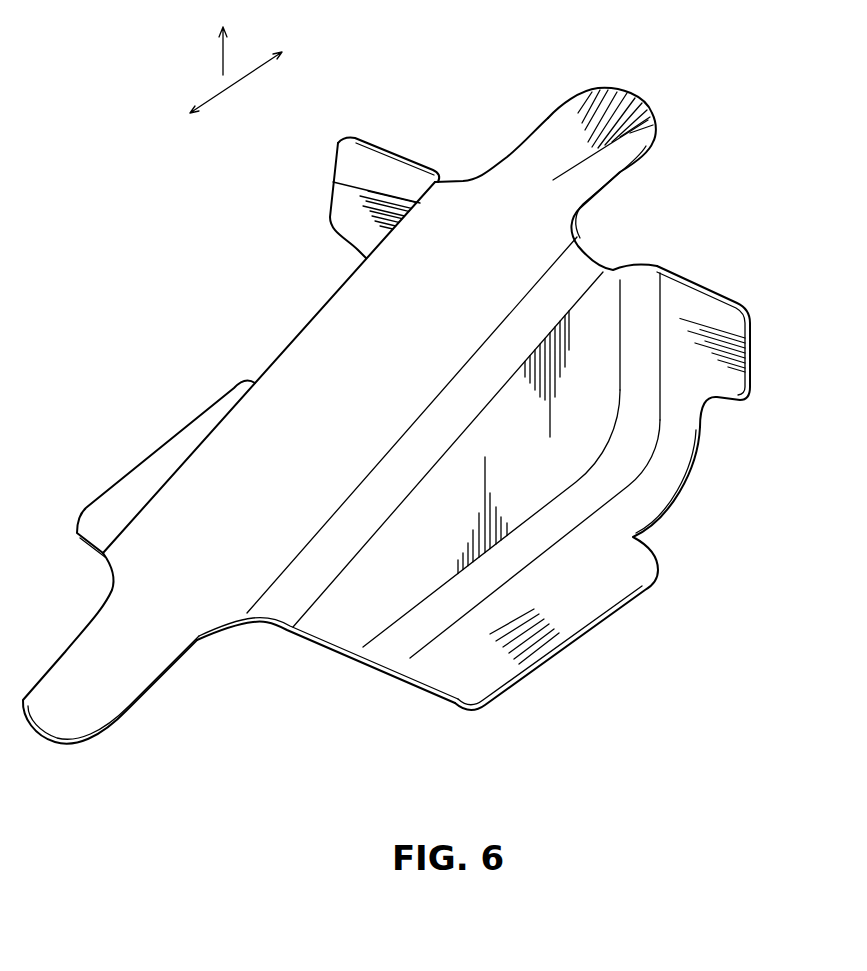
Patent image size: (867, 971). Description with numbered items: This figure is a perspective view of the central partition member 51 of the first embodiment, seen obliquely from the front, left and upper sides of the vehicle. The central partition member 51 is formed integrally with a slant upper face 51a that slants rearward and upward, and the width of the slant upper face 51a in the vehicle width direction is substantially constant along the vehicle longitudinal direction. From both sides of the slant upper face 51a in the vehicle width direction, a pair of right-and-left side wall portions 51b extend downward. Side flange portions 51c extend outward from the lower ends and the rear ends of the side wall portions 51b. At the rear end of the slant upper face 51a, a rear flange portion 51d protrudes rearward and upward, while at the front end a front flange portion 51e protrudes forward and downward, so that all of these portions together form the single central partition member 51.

The central partition member 51 is at (374, 85).
The slant upper face 51a is at (317, 343).
The side wall portions 51b is at (353, 622).
The side flange portions 51c is at (158, 468).
The rear flange portion 51d is at (548, 137).
The front flange portion 51e is at (113, 693).